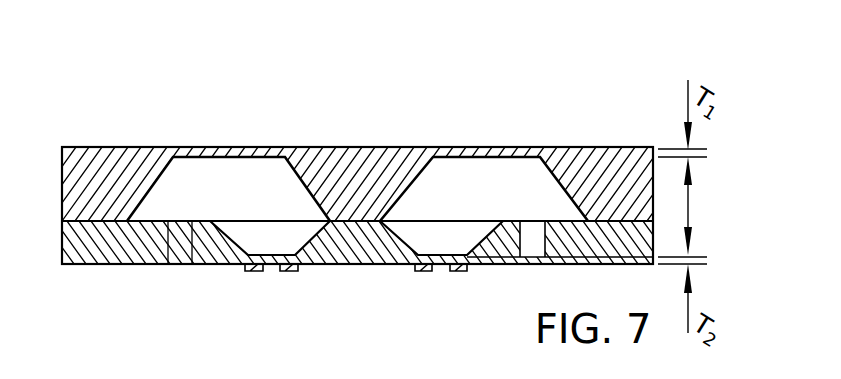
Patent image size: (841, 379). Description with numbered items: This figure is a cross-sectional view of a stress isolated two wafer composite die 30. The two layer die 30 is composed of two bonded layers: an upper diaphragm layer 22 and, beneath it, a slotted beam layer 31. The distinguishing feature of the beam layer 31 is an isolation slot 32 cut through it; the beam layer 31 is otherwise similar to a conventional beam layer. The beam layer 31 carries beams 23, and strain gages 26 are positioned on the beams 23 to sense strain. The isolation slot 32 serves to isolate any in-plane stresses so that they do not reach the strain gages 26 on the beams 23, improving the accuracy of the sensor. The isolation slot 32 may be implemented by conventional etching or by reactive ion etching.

The stress isolated two wafer composite die 30 is at (182, 143).
The diaphragm layer 22 is at (125, 146).
The slotted beam layer 31 is at (123, 264).
The isolation slot 32 is at (530, 227).
The strain gages 26 is at (425, 272).
The beams 23 is at (440, 270).